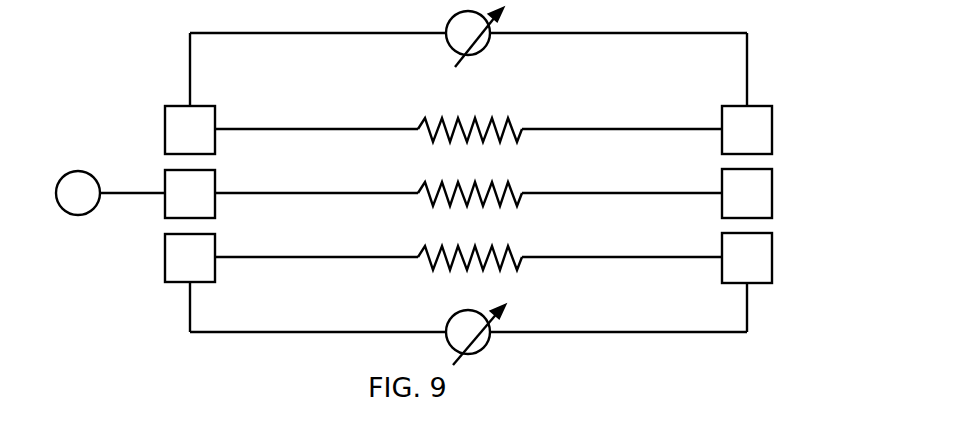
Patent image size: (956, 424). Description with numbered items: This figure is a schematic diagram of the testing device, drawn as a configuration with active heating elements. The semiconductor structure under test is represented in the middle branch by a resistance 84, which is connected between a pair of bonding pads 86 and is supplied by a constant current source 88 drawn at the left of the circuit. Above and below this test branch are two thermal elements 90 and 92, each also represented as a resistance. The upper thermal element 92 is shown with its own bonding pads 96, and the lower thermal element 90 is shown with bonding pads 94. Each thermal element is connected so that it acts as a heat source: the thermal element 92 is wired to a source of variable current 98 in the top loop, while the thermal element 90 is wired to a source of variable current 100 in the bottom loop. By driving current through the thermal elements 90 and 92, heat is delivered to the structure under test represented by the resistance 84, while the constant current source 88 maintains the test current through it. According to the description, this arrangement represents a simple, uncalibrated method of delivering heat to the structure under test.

The resistance 84 is at (471, 182).
The bonding pads 86 is at (192, 188).
The constant current source 88 is at (62, 176).
The thermal element 90 is at (471, 247).
The thermal element 92 is at (471, 119).
The bonding pads 94 is at (192, 273).
The bonding pads 96 is at (190, 135).
The source of variable current 98 is at (500, 35).
The source of variable current 100 is at (488, 354).